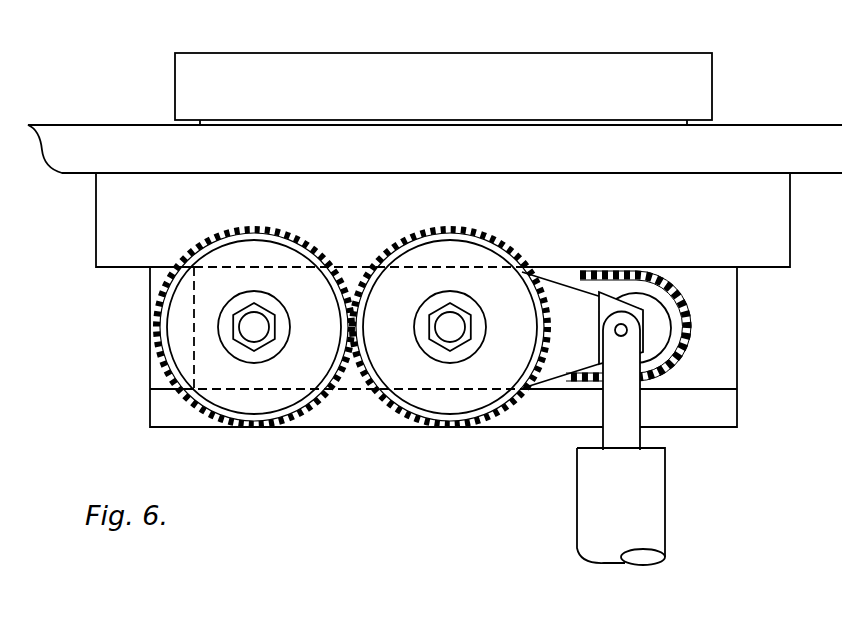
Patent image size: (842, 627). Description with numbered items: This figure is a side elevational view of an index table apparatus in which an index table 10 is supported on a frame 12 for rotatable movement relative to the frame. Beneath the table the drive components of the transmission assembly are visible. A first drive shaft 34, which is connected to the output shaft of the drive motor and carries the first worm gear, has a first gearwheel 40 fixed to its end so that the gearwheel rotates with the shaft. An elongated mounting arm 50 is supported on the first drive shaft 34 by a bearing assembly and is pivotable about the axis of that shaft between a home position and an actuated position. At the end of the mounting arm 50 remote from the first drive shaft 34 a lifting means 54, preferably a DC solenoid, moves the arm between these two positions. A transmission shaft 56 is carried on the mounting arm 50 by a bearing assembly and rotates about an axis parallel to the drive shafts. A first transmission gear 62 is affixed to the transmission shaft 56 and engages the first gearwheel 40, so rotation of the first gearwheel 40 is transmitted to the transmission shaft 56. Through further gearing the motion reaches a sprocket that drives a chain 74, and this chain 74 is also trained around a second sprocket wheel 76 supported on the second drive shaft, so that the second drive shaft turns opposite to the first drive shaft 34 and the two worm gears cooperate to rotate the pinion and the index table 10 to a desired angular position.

The index table 10 is at (498, 68).
The frame 12 is at (742, 143).
The first drive shaft 34 is at (248, 333).
The first gearwheel 40 is at (183, 324).
The mounting arm 50 is at (558, 300).
The lifting means 54 is at (650, 538).
The transmission shaft 56 is at (447, 328).
The first transmission gear 62 is at (458, 407).
The chain 74 is at (680, 317).
The second sprocket wheel 76 is at (657, 333).